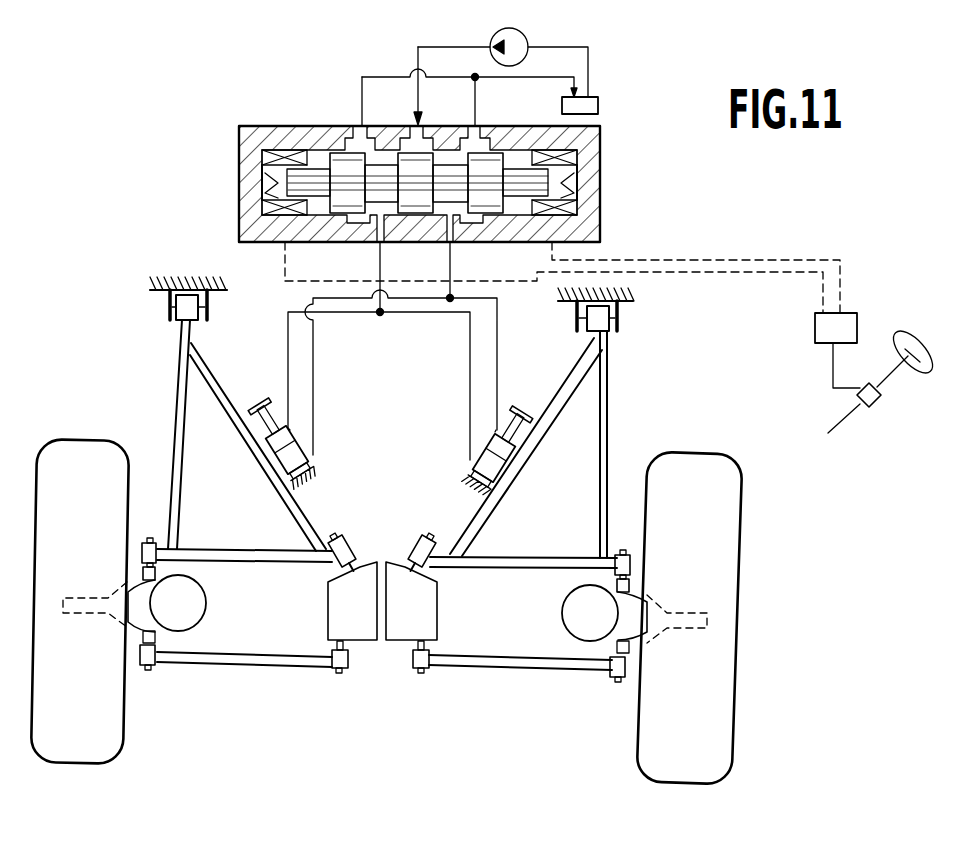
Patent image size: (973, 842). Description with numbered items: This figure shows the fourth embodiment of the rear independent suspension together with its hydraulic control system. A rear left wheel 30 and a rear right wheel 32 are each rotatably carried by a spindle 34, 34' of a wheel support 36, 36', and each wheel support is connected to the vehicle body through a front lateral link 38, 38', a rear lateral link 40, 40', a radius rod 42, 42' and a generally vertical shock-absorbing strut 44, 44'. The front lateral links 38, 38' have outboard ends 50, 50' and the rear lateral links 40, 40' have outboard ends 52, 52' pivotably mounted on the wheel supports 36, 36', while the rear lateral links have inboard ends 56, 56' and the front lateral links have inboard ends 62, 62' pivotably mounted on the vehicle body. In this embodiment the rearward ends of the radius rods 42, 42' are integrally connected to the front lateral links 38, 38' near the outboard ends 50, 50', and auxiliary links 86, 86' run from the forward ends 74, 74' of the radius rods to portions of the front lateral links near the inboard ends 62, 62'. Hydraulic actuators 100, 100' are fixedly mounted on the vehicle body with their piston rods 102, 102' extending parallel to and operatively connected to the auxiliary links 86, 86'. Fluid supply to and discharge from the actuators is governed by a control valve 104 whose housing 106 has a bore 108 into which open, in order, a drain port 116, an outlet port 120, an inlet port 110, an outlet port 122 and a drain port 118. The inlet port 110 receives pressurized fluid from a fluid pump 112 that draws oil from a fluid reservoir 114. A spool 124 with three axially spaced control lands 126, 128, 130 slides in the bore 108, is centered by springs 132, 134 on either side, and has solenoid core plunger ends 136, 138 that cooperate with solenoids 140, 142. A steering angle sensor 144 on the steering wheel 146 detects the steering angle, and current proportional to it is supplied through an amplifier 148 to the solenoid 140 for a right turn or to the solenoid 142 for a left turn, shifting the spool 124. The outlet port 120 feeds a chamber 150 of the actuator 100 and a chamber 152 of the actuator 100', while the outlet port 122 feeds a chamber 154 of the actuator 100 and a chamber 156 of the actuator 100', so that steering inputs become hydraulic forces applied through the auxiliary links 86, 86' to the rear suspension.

The control valve 104 is at (258, 118).
The housing 106 is at (580, 146).
The bore 108 is at (550, 242).
The inlet port 110 is at (422, 124).
The fluid pump 112 is at (526, 36).
The fluid reservoir 114 is at (600, 107).
The drain port 116 is at (359, 124).
The drain port 118 is at (478, 124).
The outlet port 120 is at (378, 244).
The outlet port 122 is at (460, 244).
The spool 124 is at (412, 244).
The control land 126 is at (302, 240).
The control land 128 is at (397, 244).
The control land 130 is at (459, 244).
The spring 132 is at (254, 207).
The spring 134 is at (565, 188).
The solenoid core plunger end 136 is at (262, 173).
The solenoid core plunger end 138 is at (545, 182).
The solenoid 140 is at (248, 208).
The solenoid 142 is at (555, 207).
The steering angle sensor 144 is at (876, 404).
The steering wheel 146 is at (924, 370).
The amplifier 148 is at (818, 326).
The chamber 150 is at (295, 430).
The chamber 152 is at (473, 471).
The chamber 154 is at (305, 477).
The chamber 156 is at (482, 432).
The rear left wheel 30 is at (112, 755).
The rear right wheel 32 is at (645, 768).
The spindle 34 is at (95, 589).
The spindle 34' is at (679, 606).
The wheel support 36 is at (116, 624).
The wheel support 36' is at (653, 636).
The front lateral link 38 is at (244, 534).
The front lateral link 38' is at (523, 540).
The rear lateral link 40 is at (244, 637).
The rear lateral link 40' is at (520, 642).
The radius rod 42 is at (157, 434).
The radius rod 42' is at (627, 444).
The strut 44 is at (200, 602).
The strut 44' is at (559, 611).
The outboard end 50 is at (146, 538).
The outboard end 50' is at (626, 551).
The outboard end 52 is at (163, 676).
The outboard end 52' is at (590, 687).
The inboard end 56 is at (351, 679).
The inboard end 56' is at (438, 679).
The inboard end 62 is at (357, 574).
The inboard end 62' is at (417, 571).
The forward end 74 is at (178, 320).
The forward end 74' is at (608, 325).
The auxiliary link 86 is at (258, 447).
The auxiliary link 86' is at (526, 447).
The hydraulic actuator 100 is at (303, 440).
The hydraulic actuator 100' is at (471, 448).
The piston rod 102 is at (262, 387).
The piston rod 102' is at (522, 398).